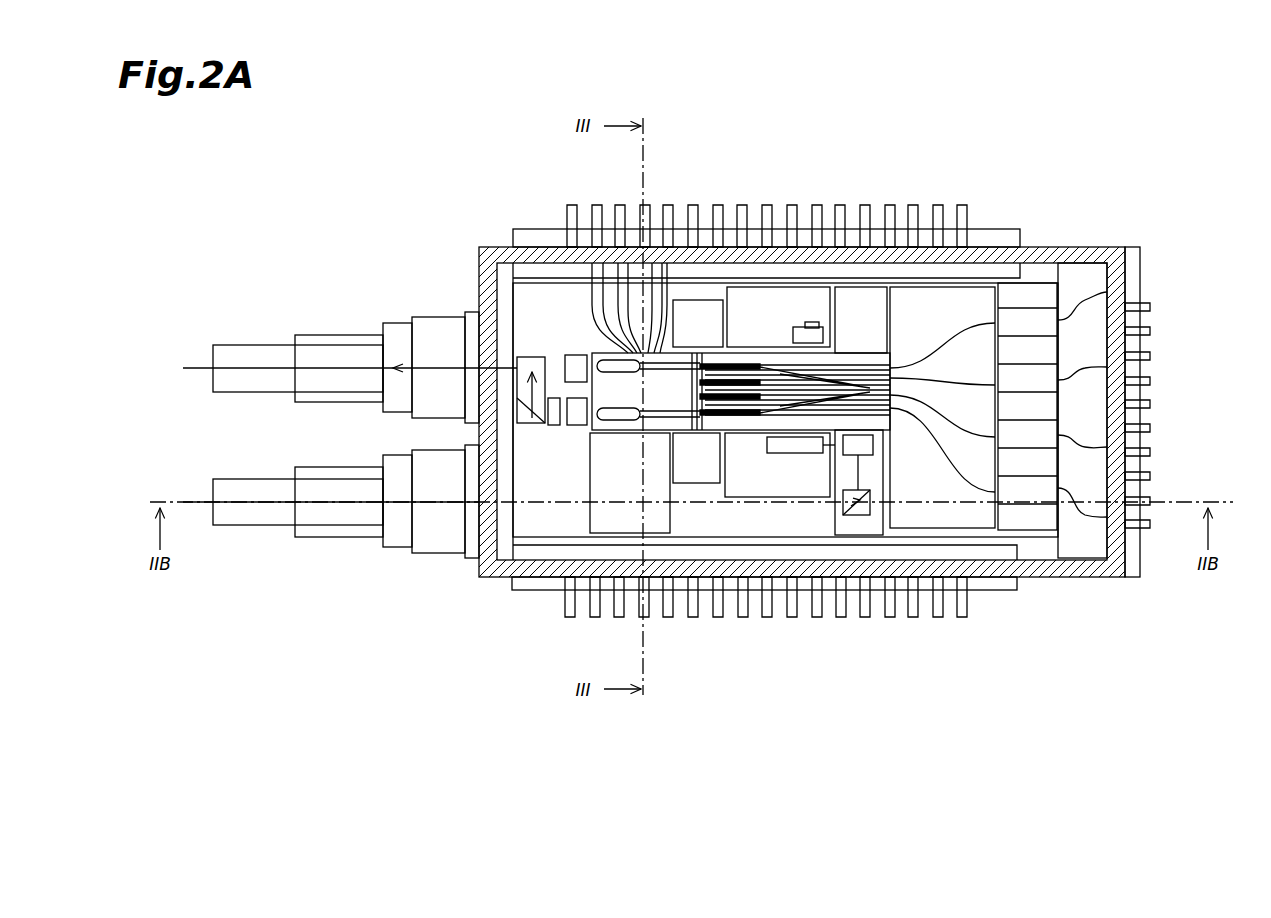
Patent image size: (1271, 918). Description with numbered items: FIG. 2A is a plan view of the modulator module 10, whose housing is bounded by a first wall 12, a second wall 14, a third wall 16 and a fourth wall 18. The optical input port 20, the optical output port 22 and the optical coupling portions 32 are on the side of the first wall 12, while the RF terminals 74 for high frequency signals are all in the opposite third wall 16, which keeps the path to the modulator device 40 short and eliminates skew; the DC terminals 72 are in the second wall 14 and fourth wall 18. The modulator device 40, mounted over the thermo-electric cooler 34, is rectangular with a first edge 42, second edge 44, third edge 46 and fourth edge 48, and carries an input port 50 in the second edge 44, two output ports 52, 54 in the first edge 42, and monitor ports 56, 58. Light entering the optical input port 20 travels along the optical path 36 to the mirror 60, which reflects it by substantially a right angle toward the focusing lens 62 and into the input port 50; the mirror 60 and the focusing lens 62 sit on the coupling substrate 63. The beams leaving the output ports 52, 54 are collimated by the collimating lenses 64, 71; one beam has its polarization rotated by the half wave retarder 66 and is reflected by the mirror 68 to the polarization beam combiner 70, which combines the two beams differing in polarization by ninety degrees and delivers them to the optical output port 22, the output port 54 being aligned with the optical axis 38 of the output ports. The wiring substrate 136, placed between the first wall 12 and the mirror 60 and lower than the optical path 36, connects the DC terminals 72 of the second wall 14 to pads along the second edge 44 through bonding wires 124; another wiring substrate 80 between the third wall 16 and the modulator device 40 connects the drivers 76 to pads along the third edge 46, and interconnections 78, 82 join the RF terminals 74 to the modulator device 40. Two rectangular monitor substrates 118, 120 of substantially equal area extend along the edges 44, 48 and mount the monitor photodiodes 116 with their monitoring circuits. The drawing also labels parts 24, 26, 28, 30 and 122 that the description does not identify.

The modulator module 10 is at (1087, 230).
The first wall 12 is at (487, 268).
The second wall 14 is at (525, 570).
The third wall 16 is at (1120, 438).
The fourth wall 18 is at (528, 252).
The optical input port 20 is at (471, 541).
The optical output port 22 is at (428, 338).
The second optical fiber 24 is at (232, 503).
The first optical fiber 26 is at (238, 368).
The ferrule 28 is at (268, 358).
The sleeve 30 is at (325, 340).
The optical coupling portions 32 is at (403, 333).
The thermo-electric cooler 34 is at (550, 293).
The optical path of the input light 36 is at (443, 503).
The optical axis of the optical output ports 38 is at (428, 372).
The modulator device 40 is at (865, 355).
The first edge 42 is at (593, 353).
The second edge 44 is at (745, 432).
The third edge 46 is at (895, 352).
The fourth edge 48 is at (840, 353).
The input port 50 is at (872, 444).
The output port 52 is at (582, 427).
The output port 54 is at (575, 360).
The monitor port 56 is at (788, 480).
The monitor port 58 is at (794, 350).
The mirror 60 is at (870, 508).
The focusing lens 62 is at (841, 456).
The coupling substrate 63 is at (858, 527).
The collimating lens 64 is at (557, 427).
The half wave retarder 66 is at (521, 405).
The mirror 68 is at (521, 426).
The polarization beam combiner 70 is at (517, 366).
The collimating lens 71 is at (545, 362).
The DC terminals 72 is at (594, 207).
The RF terminals 74 is at (1152, 329).
The drivers 76 is at (1063, 306).
The interconnection 78 is at (961, 480).
The wiring substrate 80 is at (977, 297).
The interconnection 82 is at (1090, 520).
The monitor photodiodes 116 is at (813, 326).
The monitor substrate 118 is at (784, 537).
The monitor substrate 120 is at (752, 287).
The capacitor 122 is at (700, 300).
The bonding wire 124 is at (656, 262).
The wiring substrate 136 is at (632, 523).